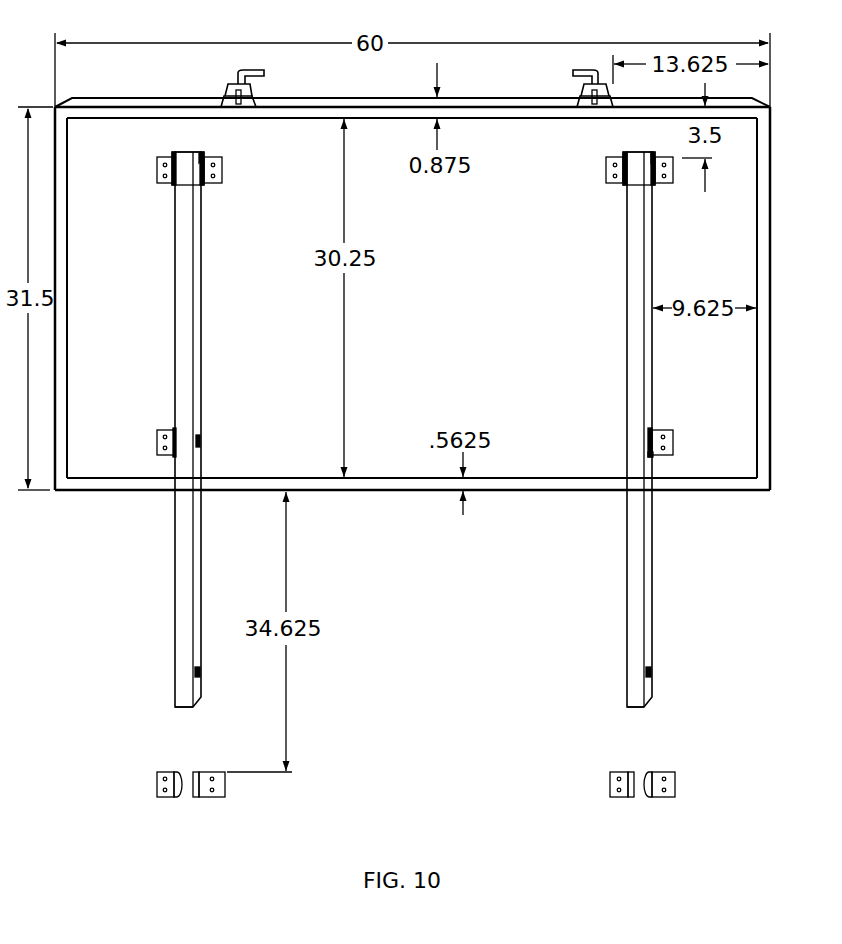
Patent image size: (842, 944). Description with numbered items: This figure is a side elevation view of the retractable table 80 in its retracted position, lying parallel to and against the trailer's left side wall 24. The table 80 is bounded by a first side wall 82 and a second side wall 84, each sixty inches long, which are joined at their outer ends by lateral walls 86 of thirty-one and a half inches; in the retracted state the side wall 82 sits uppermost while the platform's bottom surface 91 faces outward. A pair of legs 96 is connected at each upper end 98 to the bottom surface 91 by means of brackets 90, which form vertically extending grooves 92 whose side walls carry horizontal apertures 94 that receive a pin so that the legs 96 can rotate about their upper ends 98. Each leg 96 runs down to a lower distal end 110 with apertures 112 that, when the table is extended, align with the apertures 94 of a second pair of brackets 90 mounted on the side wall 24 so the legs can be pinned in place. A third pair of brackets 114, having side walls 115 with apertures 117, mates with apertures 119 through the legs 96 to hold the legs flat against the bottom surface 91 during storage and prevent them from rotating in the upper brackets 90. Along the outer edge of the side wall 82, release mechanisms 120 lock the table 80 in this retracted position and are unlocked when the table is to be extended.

The left side wall 24 is at (790, 583).
The retractable table 80 is at (52, 104).
The first side wall 82 is at (492, 97).
The second side wall 84 is at (398, 492).
The walls 86 is at (68, 258).
The brackets 90 is at (230, 172).
The bottom surface 91 is at (481, 311).
The grooves 92 is at (199, 158).
The apertures 94 is at (203, 162).
The legs 96 is at (203, 256).
The upper end 98 is at (180, 148).
The lower distal end 110 is at (208, 704).
The apertures 112 is at (203, 676).
The brackets 114 is at (147, 432).
The side walls 115 is at (176, 428).
The apertures 117 is at (655, 453).
The apertures 119 is at (201, 433).
The release mechanisms 120 is at (227, 80).